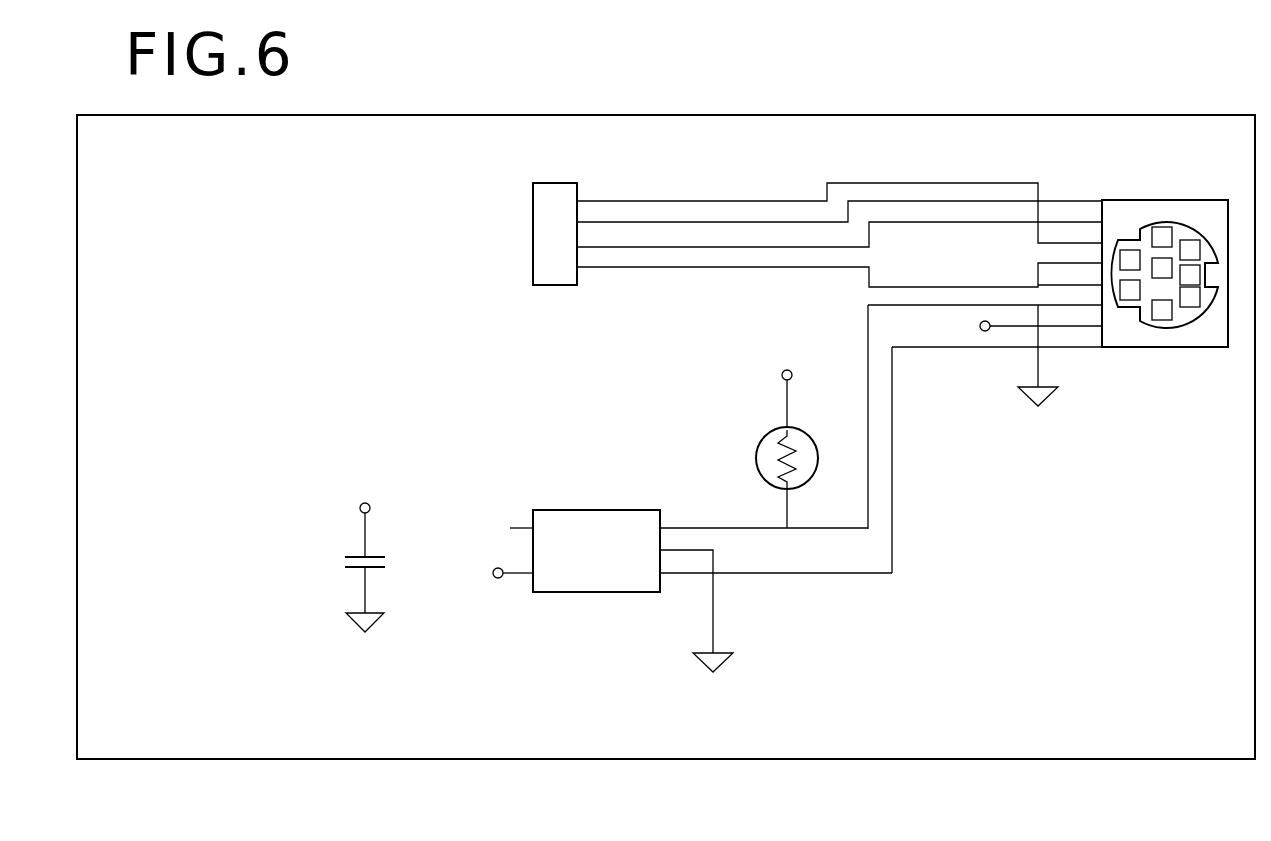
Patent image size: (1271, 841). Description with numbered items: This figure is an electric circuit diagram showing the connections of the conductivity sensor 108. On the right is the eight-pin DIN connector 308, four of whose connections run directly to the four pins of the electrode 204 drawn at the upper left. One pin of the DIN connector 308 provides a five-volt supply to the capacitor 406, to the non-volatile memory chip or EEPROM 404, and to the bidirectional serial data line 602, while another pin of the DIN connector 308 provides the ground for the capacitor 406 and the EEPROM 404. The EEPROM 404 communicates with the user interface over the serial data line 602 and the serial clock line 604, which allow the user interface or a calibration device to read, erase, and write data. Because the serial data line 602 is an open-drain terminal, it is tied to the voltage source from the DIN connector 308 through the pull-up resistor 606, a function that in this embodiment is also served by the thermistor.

The sensor 108 is at (546, 102).
The electrode 204 is at (533, 234).
The 8-Pin DIN connector 308 is at (1198, 347).
The non-volatile memory chip 404 is at (598, 509).
The capacitor 406 is at (350, 521).
The bidirectional serial data line 602 is at (704, 525).
The serial clock line 604 is at (792, 575).
The pull-up resistor 606 is at (799, 433).